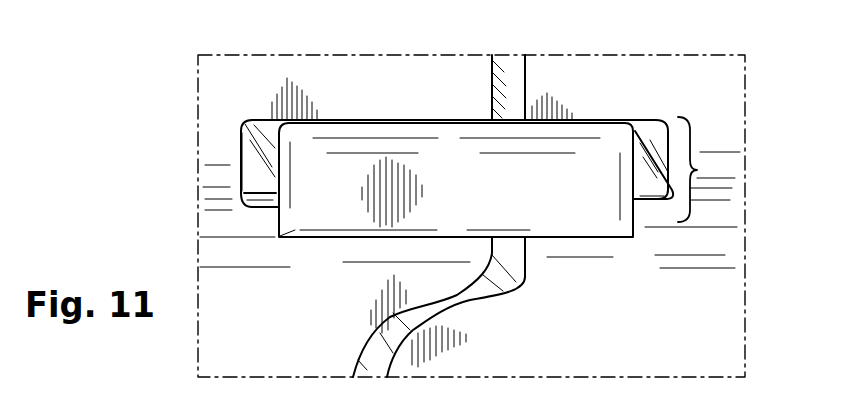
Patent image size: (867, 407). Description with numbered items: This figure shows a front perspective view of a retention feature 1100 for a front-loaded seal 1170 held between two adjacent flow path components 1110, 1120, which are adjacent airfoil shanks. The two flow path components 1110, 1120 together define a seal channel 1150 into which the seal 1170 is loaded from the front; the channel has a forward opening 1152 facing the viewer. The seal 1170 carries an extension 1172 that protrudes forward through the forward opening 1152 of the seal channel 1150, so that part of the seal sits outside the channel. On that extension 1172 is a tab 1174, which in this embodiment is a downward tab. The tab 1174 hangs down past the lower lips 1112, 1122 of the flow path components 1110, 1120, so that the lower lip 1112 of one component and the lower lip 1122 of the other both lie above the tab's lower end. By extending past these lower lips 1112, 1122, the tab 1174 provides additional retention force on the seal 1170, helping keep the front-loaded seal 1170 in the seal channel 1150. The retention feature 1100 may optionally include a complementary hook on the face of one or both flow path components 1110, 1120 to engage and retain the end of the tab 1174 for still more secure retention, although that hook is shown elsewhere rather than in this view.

The retention feature 1100 is at (165, 71).
The flow path component 1110 is at (213, 108).
The lower lip 1112 is at (260, 208).
The flow path component 1120 is at (720, 108).
The lower lip 1122 is at (653, 201).
The seal channel 1150 is at (697, 170).
The forward opening 1152 is at (247, 170).
The front-loaded seal 1170 is at (639, 166).
The extension 1172 is at (558, 132).
The tab 1174 is at (565, 216).